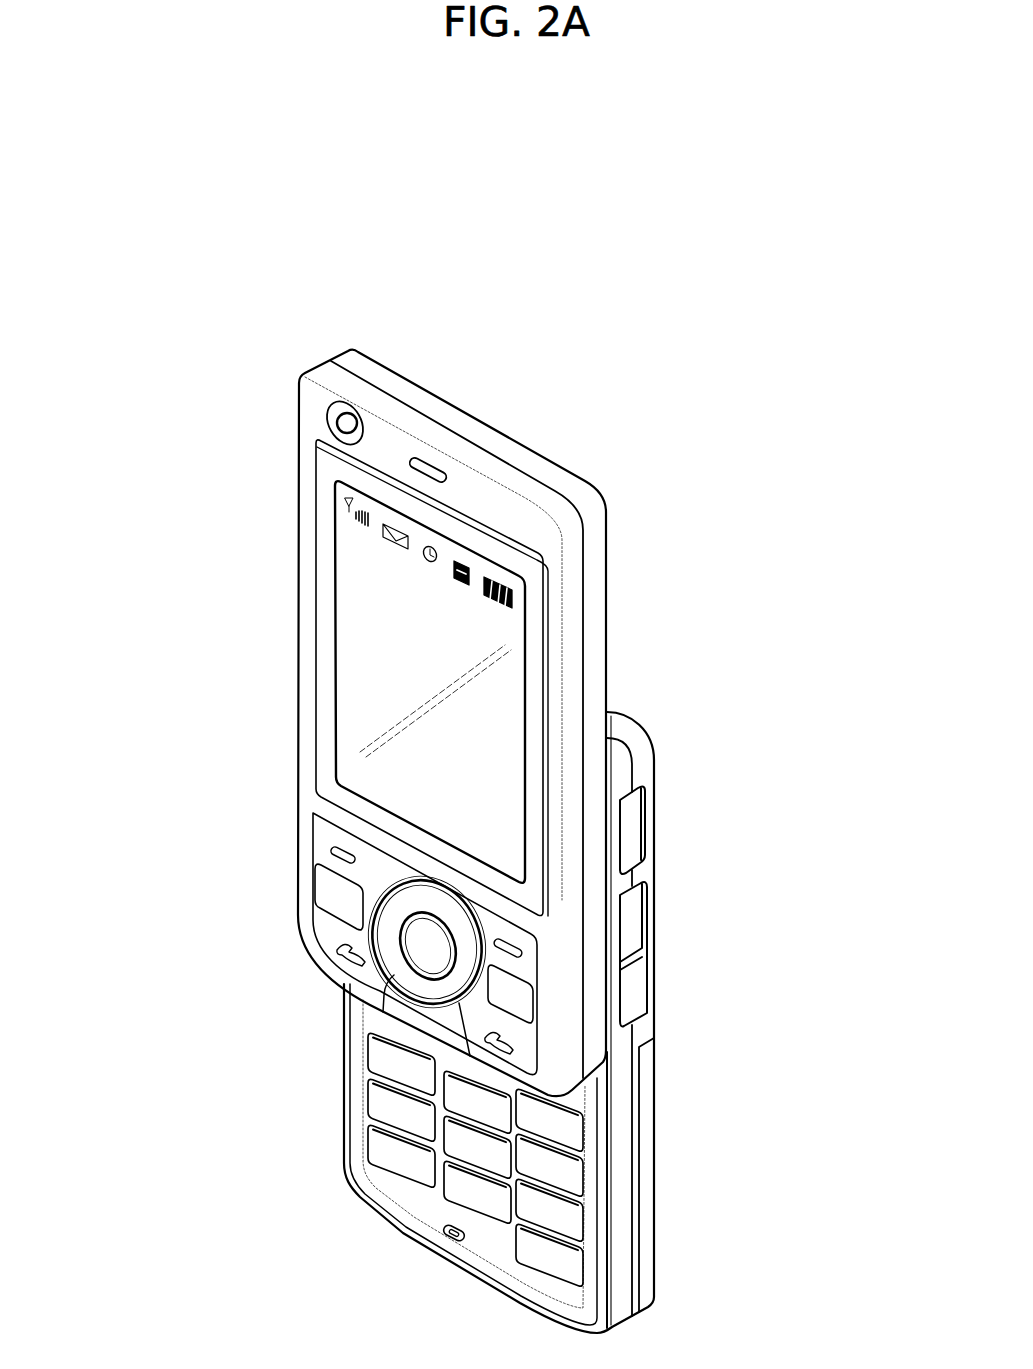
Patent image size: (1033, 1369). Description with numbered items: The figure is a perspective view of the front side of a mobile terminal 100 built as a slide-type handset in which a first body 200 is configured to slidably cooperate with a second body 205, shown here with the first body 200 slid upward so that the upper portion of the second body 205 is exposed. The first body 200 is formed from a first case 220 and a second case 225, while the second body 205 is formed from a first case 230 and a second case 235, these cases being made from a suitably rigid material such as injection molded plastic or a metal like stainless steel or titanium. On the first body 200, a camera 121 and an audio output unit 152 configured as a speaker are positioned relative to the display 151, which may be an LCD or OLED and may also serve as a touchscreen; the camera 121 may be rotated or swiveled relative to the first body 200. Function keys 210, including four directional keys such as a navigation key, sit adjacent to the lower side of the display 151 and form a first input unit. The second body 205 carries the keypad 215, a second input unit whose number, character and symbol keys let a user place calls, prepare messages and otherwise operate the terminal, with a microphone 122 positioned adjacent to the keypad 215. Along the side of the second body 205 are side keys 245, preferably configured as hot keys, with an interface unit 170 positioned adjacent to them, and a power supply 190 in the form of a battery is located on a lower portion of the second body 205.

The mobile terminal 100 is at (646, 380).
The camera 121 is at (332, 422).
The microphone 122 is at (455, 1243).
The display 151 is at (352, 621).
The audio output unit 152 is at (427, 463).
The interface unit 170 is at (635, 822).
The power supply 190 is at (640, 1150).
The first body 200 is at (258, 513).
The second body 205 is at (324, 1069).
The function keys 210 is at (330, 887).
The keypad 215 is at (377, 1136).
The first case 220 is at (577, 608).
The second case 225 is at (598, 565).
The first case 230 is at (618, 757).
The second case 235 is at (647, 783).
The side keys 245 is at (639, 984).